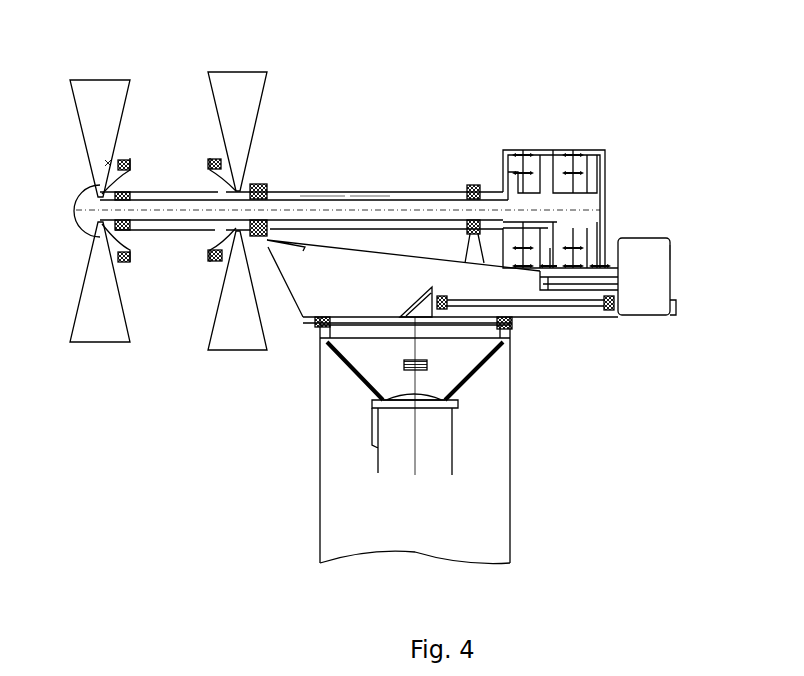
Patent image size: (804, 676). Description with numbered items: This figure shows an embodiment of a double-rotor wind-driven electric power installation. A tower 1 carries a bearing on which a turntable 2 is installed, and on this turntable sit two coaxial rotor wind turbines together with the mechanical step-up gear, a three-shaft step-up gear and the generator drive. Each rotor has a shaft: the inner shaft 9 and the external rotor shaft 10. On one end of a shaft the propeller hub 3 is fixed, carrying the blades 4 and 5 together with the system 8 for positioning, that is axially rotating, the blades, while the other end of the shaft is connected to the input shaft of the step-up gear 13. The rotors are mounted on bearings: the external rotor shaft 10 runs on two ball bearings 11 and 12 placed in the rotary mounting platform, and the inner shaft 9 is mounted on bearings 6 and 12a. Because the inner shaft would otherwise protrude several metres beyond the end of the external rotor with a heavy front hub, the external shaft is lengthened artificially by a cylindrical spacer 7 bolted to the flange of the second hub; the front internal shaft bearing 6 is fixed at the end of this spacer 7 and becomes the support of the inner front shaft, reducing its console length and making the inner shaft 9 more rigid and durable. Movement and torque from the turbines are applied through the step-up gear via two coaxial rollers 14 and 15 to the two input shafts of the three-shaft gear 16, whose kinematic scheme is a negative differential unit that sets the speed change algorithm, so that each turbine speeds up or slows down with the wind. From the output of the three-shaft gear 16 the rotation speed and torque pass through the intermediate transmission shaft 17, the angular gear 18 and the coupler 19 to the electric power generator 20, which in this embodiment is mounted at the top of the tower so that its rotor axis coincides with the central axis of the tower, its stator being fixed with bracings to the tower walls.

The tower 1 is at (332, 407).
The turntable 2 is at (318, 298).
The propeller hub 3 is at (208, 252).
The blade 4 is at (100, 223).
The blade 5 is at (97, 172).
The front internal shaft bearing 6 is at (108, 163).
The spacer 7 is at (195, 192).
The blade positioning system 8 is at (125, 162).
The inner shaft 9 is at (335, 197).
The external rotor shaft 10 is at (367, 199).
The ball bearing 11 is at (258, 188).
The ball bearing 12 is at (471, 187).
The bearing 12a is at (476, 186).
The step-up gear 13 is at (540, 197).
The coaxial roller 14 is at (612, 268).
The coaxial roller 15 is at (660, 280).
The three-shaft gear 16 is at (672, 250).
The transmission shaft 17 is at (520, 298).
The angular gear 18 is at (417, 307).
The coupler 19 is at (420, 375).
The electric power generator 20 is at (422, 473).